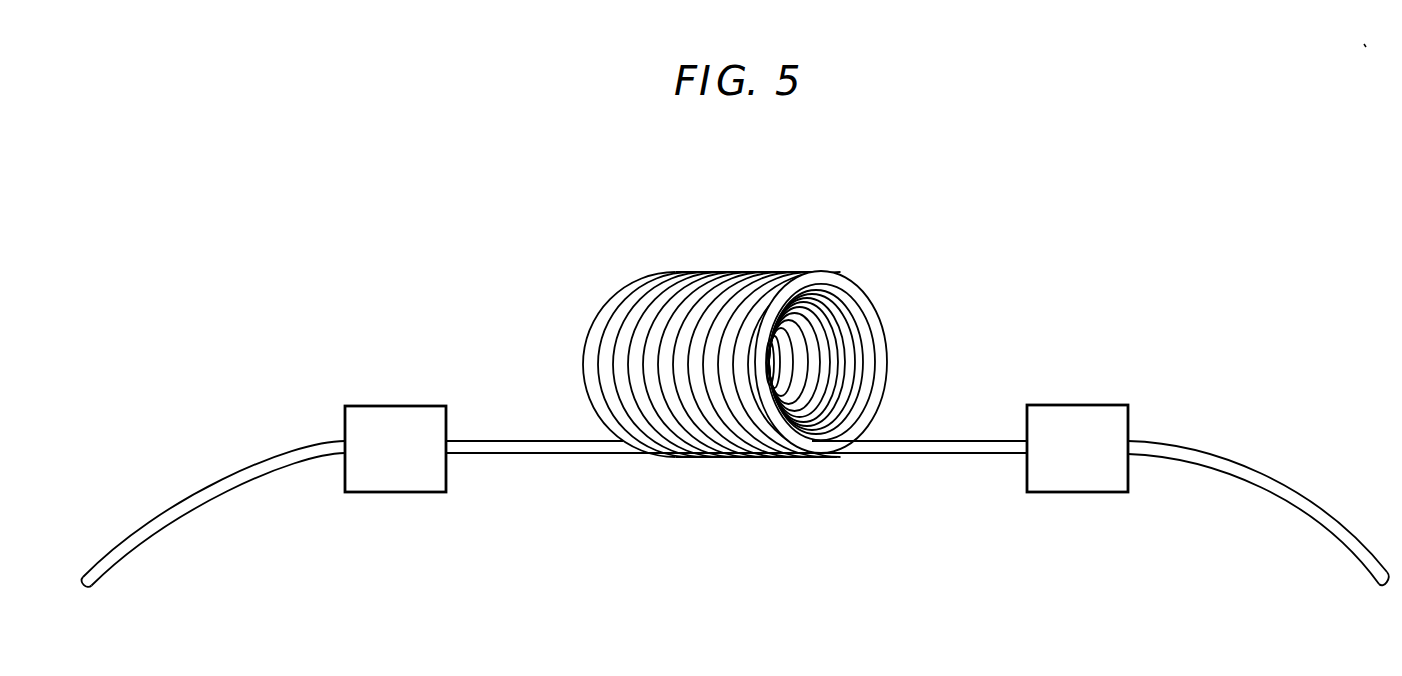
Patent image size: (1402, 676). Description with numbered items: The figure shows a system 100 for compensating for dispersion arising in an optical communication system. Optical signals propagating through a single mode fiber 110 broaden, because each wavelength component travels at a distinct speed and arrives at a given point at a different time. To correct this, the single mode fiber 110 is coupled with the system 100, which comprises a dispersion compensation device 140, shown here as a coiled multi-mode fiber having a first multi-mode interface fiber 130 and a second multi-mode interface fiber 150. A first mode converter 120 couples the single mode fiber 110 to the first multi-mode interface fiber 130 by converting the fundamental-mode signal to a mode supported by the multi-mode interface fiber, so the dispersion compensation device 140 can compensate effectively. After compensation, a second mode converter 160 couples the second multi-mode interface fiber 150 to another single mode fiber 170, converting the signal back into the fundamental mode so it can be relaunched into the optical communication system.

The system 100 is at (882, 210).
The single mode fiber 110 is at (147, 530).
The first mode converter 120 is at (395, 449).
The first multi-mode interface fiber 130 is at (538, 457).
The dispersion compensation device 140 is at (720, 272).
The second multi-mode interface fiber 150 is at (930, 457).
The second mode converter 160 is at (1077, 448).
The single mode fiber 170 is at (1293, 510).